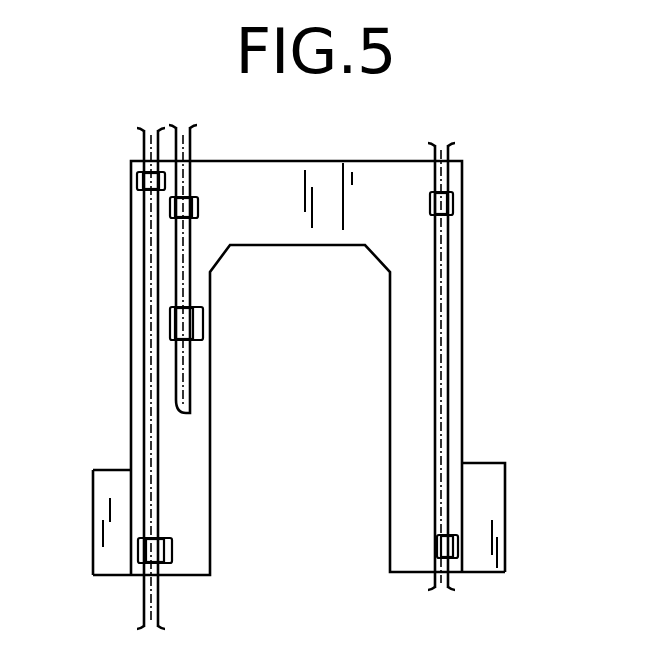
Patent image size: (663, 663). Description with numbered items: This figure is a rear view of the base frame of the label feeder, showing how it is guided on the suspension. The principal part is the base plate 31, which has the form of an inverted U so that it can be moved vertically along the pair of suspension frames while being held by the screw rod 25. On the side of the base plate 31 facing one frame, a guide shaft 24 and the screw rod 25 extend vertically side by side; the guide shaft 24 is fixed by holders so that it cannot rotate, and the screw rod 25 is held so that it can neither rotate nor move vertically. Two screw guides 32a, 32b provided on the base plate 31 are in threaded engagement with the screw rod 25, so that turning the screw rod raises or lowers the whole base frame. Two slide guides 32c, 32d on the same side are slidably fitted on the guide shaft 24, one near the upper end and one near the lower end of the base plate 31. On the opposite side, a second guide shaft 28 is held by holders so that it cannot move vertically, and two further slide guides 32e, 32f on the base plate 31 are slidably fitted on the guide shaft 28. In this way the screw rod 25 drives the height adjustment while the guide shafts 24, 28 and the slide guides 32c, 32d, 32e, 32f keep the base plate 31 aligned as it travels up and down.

The base plate 31 is at (378, 187).
The guide shaft 24 is at (148, 267).
The screw rod 25 is at (190, 387).
The guide shaft 28 is at (462, 177).
The screw guide 32a is at (200, 208).
The screw guide 32b is at (206, 322).
The slide guide 32c is at (137, 180).
The slide guide 32d is at (140, 557).
The slide guide 32e is at (455, 205).
The slide guide 32f is at (437, 550).